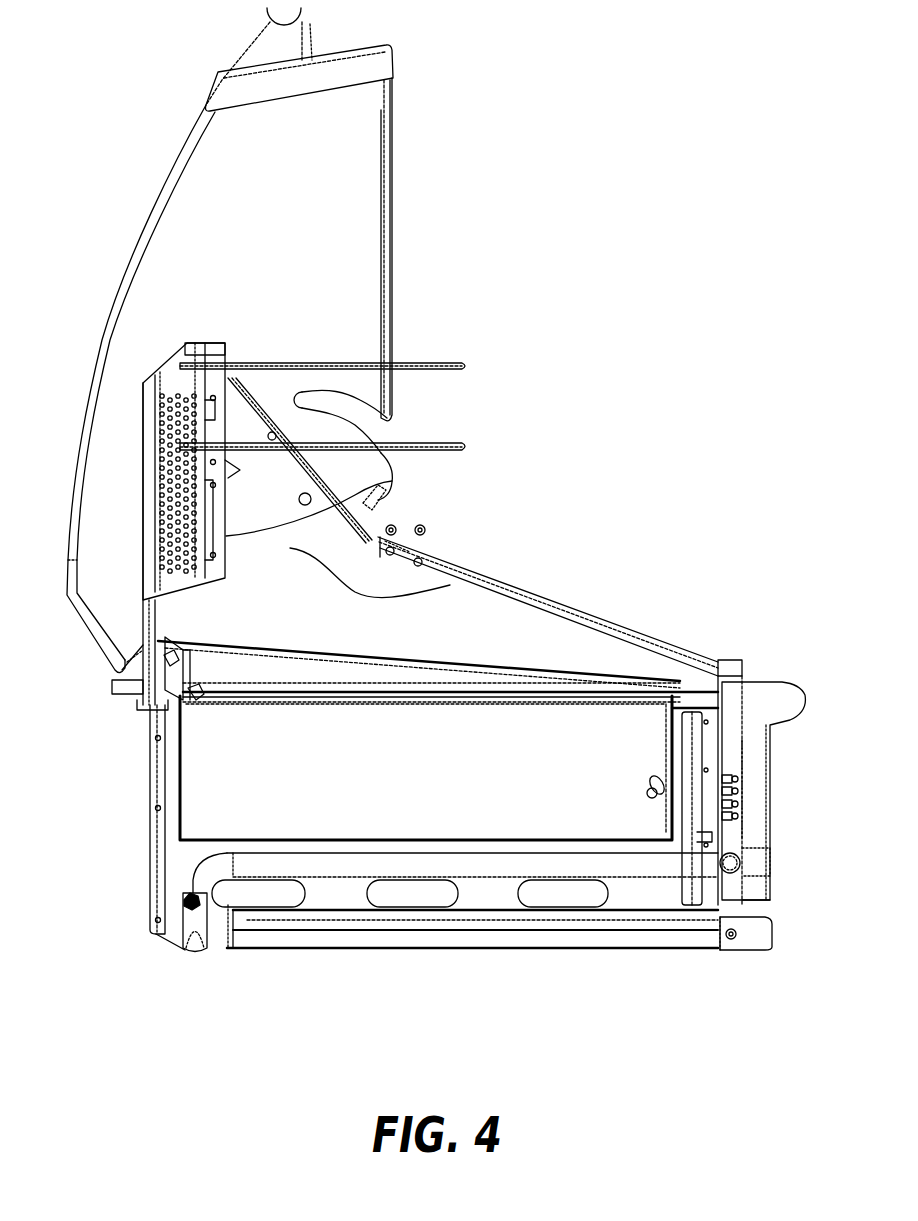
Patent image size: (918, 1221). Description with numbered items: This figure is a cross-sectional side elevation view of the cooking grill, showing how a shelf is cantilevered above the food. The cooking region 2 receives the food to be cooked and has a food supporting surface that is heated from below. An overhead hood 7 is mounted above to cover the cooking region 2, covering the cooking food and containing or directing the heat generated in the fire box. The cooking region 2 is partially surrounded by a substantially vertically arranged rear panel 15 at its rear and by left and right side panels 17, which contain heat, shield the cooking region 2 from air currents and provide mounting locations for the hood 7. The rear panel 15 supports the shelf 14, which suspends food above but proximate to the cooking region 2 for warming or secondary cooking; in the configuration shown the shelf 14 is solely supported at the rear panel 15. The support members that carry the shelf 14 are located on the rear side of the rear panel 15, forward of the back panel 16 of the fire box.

The cooking region 2 is at (667, 708).
The overhead hood 7 is at (122, 262).
The shelf 14 is at (464, 362).
The rear panel 15 is at (392, 481).
The back panel 16 is at (150, 773).
The side panel 17 is at (438, 598).